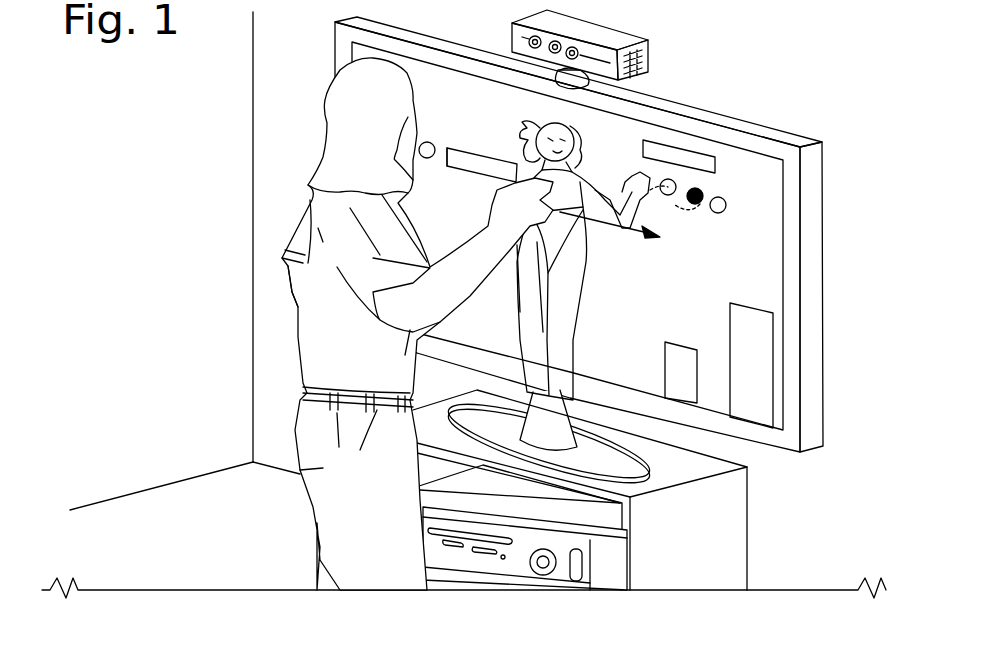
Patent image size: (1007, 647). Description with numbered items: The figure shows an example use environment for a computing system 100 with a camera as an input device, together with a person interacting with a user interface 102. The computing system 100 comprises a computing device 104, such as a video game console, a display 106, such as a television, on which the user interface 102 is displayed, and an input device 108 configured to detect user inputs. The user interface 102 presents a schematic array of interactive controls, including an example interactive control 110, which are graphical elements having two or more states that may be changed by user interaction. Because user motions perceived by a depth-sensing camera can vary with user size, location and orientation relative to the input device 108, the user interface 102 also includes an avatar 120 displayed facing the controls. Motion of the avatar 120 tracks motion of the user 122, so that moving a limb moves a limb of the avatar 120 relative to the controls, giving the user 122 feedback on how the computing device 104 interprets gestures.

The computing system 100 is at (797, 43).
The user interface 102 is at (733, 188).
The computing device 104 is at (583, 527).
The display 106 is at (808, 297).
The input device 108 is at (603, 37).
The interactive control 110 is at (692, 193).
The avatar 120 is at (565, 295).
The user 122 is at (307, 353).